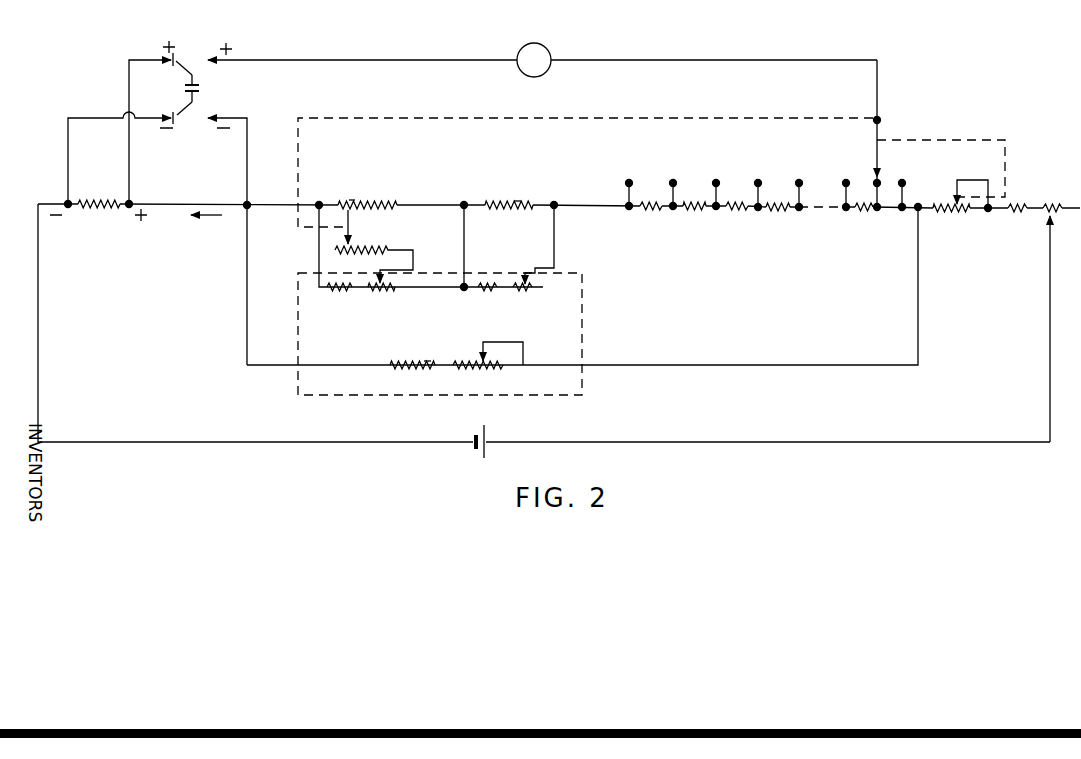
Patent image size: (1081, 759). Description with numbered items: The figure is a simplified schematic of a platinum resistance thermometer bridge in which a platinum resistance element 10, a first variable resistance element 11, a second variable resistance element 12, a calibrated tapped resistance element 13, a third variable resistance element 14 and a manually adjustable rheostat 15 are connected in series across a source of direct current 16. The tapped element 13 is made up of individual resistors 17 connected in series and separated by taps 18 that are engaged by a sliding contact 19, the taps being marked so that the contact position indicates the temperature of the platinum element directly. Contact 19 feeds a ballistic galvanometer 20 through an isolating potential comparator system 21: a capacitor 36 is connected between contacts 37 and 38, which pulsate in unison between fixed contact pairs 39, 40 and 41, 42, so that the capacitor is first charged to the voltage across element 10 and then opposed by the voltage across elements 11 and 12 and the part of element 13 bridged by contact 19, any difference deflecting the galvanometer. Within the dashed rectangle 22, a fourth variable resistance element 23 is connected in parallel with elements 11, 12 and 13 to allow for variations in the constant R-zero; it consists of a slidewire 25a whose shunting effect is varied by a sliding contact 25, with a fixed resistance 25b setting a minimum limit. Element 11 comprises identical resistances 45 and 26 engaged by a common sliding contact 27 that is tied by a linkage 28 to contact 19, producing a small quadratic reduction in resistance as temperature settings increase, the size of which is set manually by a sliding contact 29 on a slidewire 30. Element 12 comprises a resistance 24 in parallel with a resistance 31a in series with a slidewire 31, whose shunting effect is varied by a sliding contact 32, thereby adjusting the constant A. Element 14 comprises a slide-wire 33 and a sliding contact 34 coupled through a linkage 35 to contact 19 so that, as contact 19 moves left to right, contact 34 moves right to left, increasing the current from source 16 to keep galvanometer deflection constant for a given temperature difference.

The platinum resistance element 10 is at (101, 210).
The first variable resistance element 11 is at (358, 180).
The second variable resistance element 12 is at (518, 200).
The calibrated tapped resistance element 13 is at (783, 215).
The third variable resistance element 14 is at (976, 215).
The manually adjustable rheostat 15 is at (1048, 204).
The source of direct current 16 is at (486, 442).
The individual resistors 17 is at (658, 213).
The taps 18 is at (627, 193).
The sliding contact 19 is at (878, 152).
The ballistic galvanometer 20 is at (547, 50).
The isolating potential comparator system 21 is at (188, 58).
The rectangle 22 is at (583, 318).
The fourth variable resistance element 23 is at (428, 356).
The resistance 24 is at (500, 208).
The sliding contact 25 is at (510, 342).
The slidewire 25a is at (478, 366).
The fixed resistance 25b is at (435, 366).
The resistance 26 is at (385, 248).
The common sliding contact 27 is at (351, 224).
The linkage 28 is at (484, 118).
The sliding contact 29 is at (385, 287).
The slidewire 30 is at (376, 290).
The slidewire 31 is at (517, 302).
The resistance 31a is at (480, 289).
The sliding contact 32 is at (535, 268).
The slide-wire 33 is at (948, 211).
The sliding contact 34 is at (967, 180).
The linkage 35 is at (919, 138).
The capacitor 36 is at (203, 89).
The contact 37 is at (182, 67).
The contact 38 is at (178, 106).
The fixed contact 39 is at (143, 58).
The fixed contact 40 is at (146, 119).
The fixed contact 41 is at (240, 58).
The fixed contact 42 is at (237, 117).
The resistance 45 is at (390, 208).